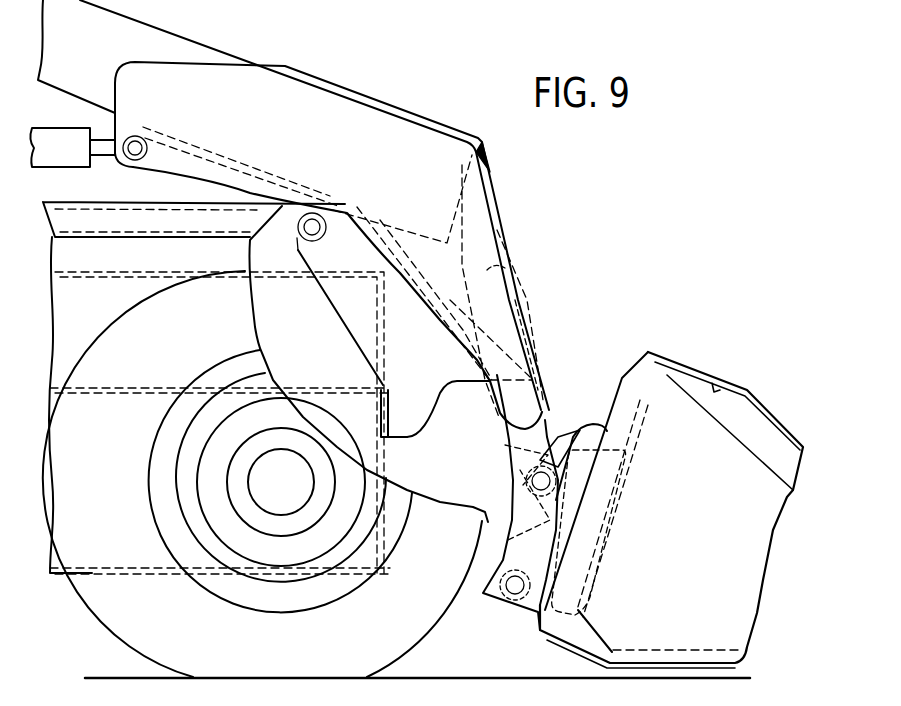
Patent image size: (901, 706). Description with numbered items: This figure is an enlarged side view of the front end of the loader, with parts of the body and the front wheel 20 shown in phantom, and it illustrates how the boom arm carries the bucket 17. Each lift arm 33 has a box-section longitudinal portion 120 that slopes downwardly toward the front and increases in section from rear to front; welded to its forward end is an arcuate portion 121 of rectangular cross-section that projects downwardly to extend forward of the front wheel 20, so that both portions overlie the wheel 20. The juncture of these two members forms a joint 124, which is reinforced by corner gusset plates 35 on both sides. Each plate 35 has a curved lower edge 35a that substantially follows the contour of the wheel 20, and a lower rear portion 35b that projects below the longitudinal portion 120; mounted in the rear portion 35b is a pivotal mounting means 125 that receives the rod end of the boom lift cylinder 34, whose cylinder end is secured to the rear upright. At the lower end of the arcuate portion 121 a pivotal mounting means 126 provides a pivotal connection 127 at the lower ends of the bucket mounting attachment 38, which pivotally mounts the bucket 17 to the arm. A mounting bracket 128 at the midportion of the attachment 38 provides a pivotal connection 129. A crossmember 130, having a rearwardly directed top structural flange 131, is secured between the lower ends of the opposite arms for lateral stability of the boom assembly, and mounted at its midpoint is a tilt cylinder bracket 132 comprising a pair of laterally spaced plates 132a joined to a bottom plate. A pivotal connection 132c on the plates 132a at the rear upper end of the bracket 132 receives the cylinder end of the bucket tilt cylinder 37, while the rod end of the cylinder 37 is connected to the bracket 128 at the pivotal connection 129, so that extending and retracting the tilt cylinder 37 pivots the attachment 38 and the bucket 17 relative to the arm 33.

The longitudinal portion 120 is at (100, 52).
The lift arm 33 is at (280, 63).
The boom lift cylinder 34 is at (52, 137).
The pivotal mounting means 125 is at (138, 133).
The corner gusset plate 35 is at (428, 143).
The curved lower edge 35a is at (230, 180).
The lower rear portion 35b is at (120, 165).
The pivotal connection 132c is at (316, 225).
The joint 124 is at (480, 152).
The arcuate portion 121 is at (480, 242).
The top structural flange 131 is at (487, 270).
The crossmember 130 is at (533, 310).
The wheel 20 is at (157, 342).
The tilt cylinder bracket 132 is at (336, 332).
The laterally spaced plates 132a is at (403, 423).
The bucket tilt cylinder 37 is at (462, 400).
The bucket mounting attachment 38 is at (650, 347).
The mounting bracket 128 is at (570, 437).
The pivotal connection 129 is at (541, 482).
The pivotal connection 127 is at (517, 580).
The pivotal mounting means 126 is at (527, 613).
The bucket 17 is at (702, 540).